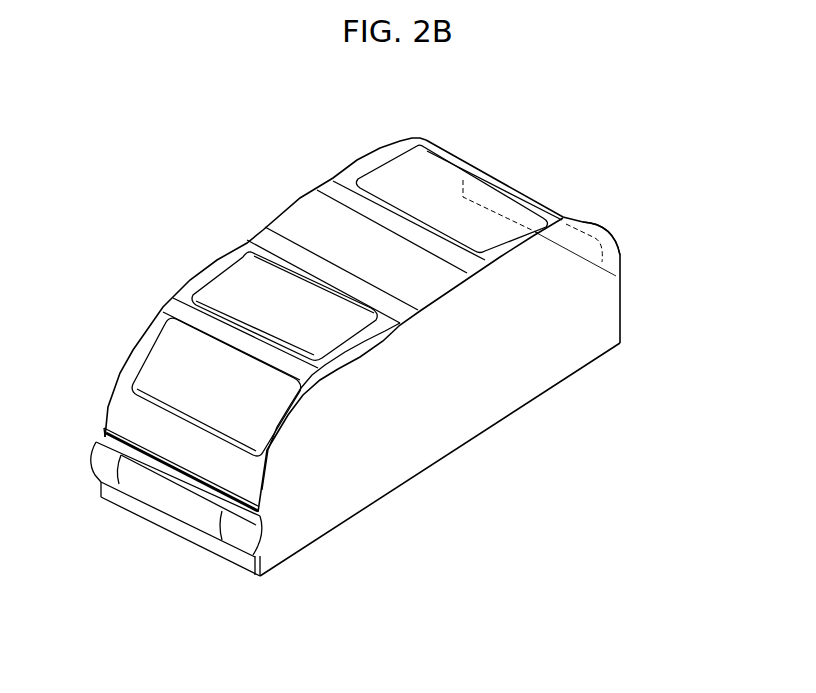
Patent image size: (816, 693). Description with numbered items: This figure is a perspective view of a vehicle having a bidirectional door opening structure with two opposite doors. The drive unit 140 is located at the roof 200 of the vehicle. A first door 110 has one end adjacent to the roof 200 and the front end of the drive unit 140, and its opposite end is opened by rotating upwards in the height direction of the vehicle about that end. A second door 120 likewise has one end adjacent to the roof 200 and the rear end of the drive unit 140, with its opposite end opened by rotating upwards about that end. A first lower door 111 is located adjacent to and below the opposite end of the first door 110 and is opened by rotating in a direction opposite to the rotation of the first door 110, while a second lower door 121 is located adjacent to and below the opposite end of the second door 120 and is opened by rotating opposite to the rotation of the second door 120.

The drive unit 140 is at (307, 197).
The roof 200 is at (345, 220).
The second door 120 is at (508, 207).
The first door 110 is at (225, 293).
The second lower door 121 is at (620, 308).
The first lower door 111 is at (186, 507).